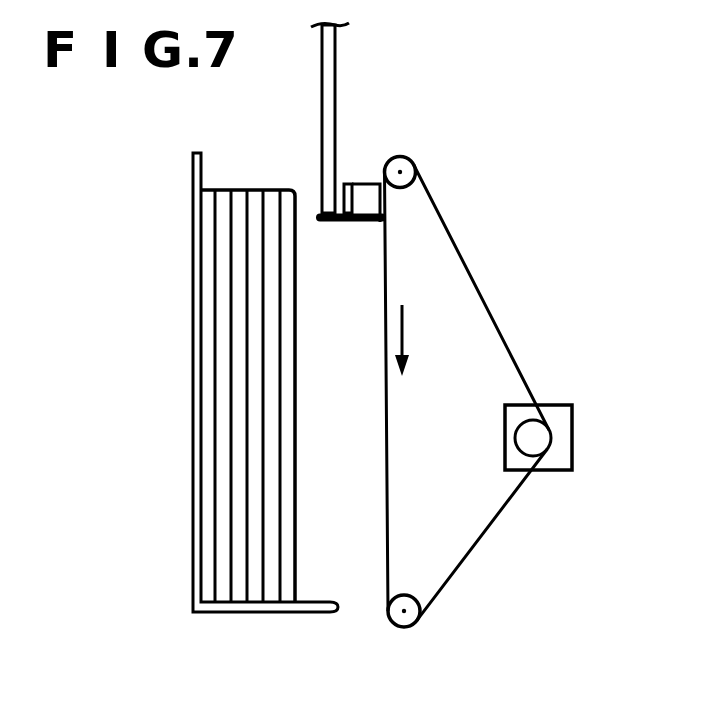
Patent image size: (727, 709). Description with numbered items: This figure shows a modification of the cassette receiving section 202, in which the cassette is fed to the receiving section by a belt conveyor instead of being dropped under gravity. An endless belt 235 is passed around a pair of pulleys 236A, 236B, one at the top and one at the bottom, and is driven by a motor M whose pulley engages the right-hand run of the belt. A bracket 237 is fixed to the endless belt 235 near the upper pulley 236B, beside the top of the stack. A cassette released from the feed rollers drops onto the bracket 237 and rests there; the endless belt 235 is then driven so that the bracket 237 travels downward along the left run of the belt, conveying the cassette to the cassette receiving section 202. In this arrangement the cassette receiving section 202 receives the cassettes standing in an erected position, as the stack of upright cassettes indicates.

The cassette receiving section 202 is at (265, 613).
The bracket 237 is at (378, 222).
The endless belt 235 is at (448, 218).
The pulley 236B is at (410, 160).
The pulley 236A is at (410, 618).
The motor M is at (567, 447).